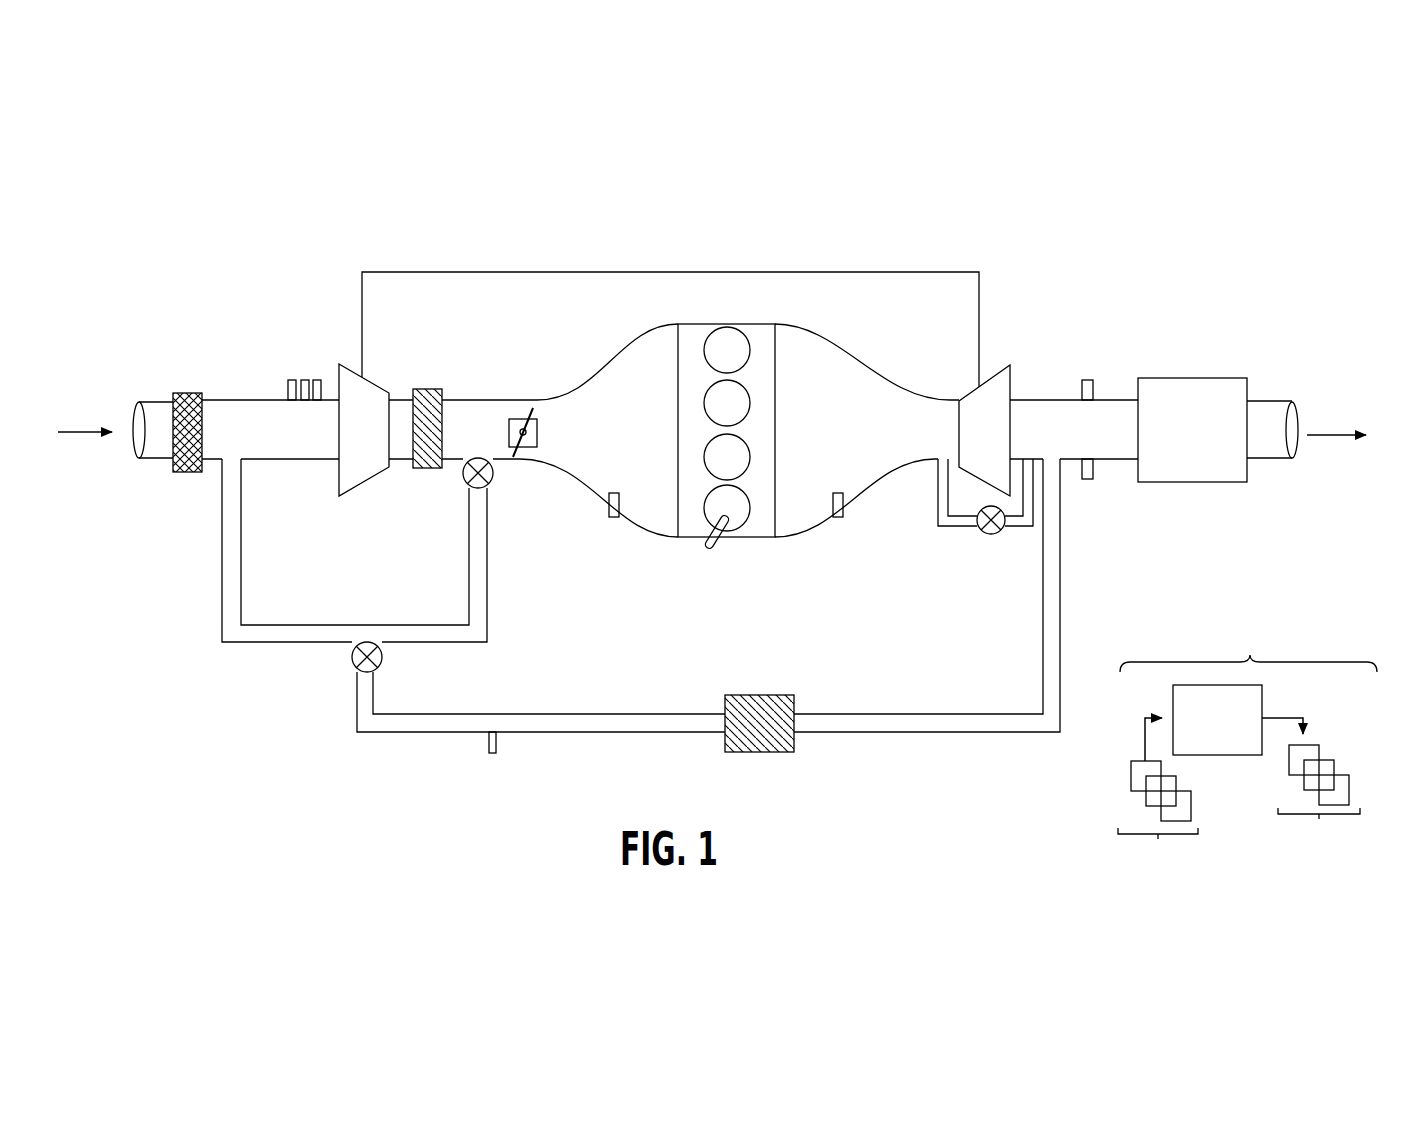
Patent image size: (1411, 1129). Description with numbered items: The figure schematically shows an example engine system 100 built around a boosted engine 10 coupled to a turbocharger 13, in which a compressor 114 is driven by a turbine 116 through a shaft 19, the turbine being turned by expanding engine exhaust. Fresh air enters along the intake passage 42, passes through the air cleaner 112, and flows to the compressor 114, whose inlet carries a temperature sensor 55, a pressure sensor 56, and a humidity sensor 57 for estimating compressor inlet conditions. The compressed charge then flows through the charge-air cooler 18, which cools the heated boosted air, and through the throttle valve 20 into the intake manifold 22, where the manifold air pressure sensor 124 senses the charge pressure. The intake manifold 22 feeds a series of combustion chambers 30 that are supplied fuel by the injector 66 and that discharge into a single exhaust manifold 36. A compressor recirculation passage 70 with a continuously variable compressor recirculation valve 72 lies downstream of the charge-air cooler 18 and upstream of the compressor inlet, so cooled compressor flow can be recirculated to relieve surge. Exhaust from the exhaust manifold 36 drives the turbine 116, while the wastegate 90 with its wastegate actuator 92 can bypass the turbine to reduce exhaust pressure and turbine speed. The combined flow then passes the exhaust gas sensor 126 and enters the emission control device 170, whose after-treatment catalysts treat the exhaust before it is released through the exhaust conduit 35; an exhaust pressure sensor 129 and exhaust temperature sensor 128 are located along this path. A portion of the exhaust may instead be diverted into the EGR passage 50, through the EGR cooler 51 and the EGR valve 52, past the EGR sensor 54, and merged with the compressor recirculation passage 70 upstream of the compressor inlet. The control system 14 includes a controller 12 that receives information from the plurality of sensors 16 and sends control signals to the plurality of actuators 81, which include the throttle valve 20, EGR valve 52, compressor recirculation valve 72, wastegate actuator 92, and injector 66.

The engine system 100 is at (1287, 110).
The engine 10 is at (776, 413).
The controller 12 is at (1217, 720).
The turbocharger 13 is at (352, 510).
The control system 14 is at (1248, 641).
The sensors 16 is at (1158, 800).
The charge-air cooler 18 is at (427, 389).
The shaft 19 is at (660, 272).
The throttle valve 20 is at (537, 441).
The intake manifold 22 is at (599, 430).
The combustion chambers 30 is at (748, 345).
The exhaust conduit 35 is at (1272, 401).
The exhaust manifold 36 is at (867, 430).
The intake passage 42 is at (158, 462).
The EGR passage 50 is at (855, 732).
The EGR cooler 51 is at (752, 695).
The EGR valve 52 is at (354, 666).
The EGR sensor 54 is at (493, 756).
The temperature sensor 55 is at (292, 380).
The pressure sensor 56 is at (305, 380).
The humidity sensor 57 is at (317, 380).
The injector 66 is at (722, 542).
The compressor recirculation passage 70 is at (487, 545).
The compressor recirculation valve 72 is at (490, 483).
The actuators 81 is at (1313, 791).
The wastegate 90 is at (940, 526).
The wastegate actuator 92 is at (996, 535).
The air cleaner 112 is at (186, 393).
The compressor 114 is at (364, 430).
The turbine 116 is at (984, 430).
The manifold air pressure sensor 124 is at (609, 497).
The exhaust gas sensor 126 is at (843, 497).
The exhaust temperature sensor 128 is at (1087, 479).
The exhaust pressure sensor 129 is at (1087, 380).
The emission control device 170 is at (1181, 378).